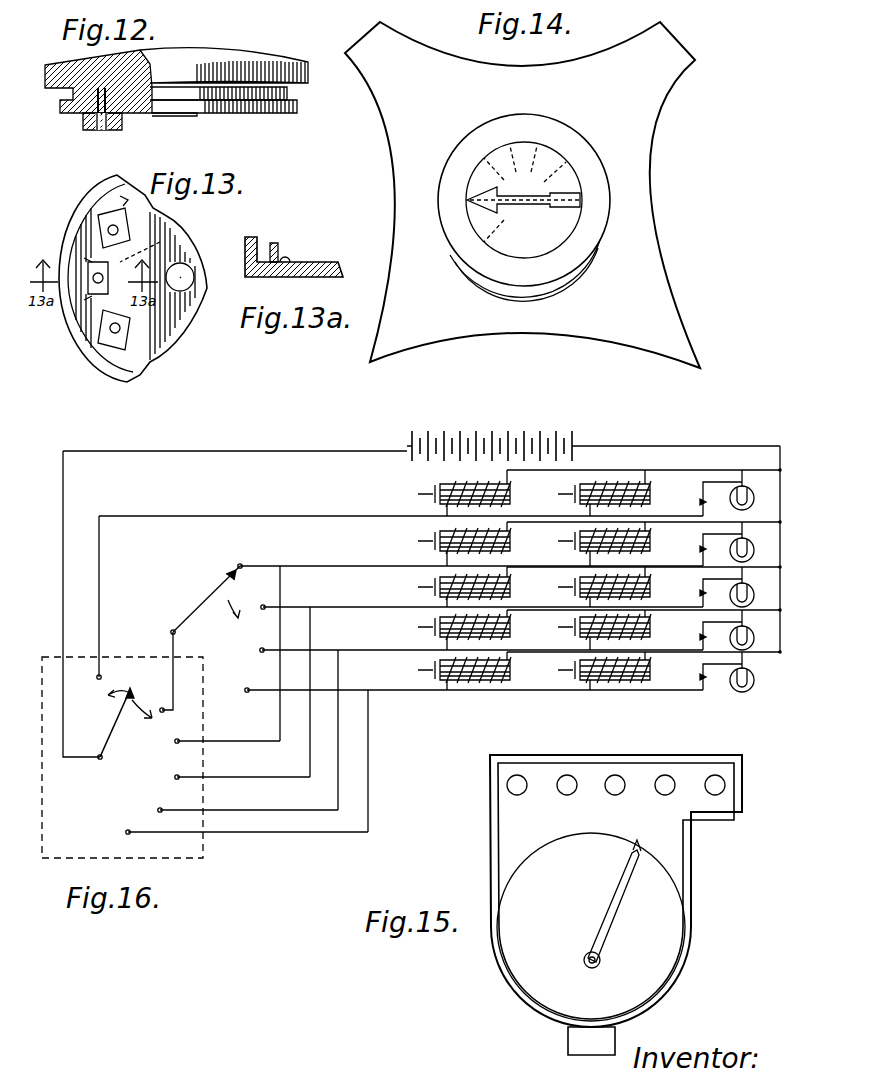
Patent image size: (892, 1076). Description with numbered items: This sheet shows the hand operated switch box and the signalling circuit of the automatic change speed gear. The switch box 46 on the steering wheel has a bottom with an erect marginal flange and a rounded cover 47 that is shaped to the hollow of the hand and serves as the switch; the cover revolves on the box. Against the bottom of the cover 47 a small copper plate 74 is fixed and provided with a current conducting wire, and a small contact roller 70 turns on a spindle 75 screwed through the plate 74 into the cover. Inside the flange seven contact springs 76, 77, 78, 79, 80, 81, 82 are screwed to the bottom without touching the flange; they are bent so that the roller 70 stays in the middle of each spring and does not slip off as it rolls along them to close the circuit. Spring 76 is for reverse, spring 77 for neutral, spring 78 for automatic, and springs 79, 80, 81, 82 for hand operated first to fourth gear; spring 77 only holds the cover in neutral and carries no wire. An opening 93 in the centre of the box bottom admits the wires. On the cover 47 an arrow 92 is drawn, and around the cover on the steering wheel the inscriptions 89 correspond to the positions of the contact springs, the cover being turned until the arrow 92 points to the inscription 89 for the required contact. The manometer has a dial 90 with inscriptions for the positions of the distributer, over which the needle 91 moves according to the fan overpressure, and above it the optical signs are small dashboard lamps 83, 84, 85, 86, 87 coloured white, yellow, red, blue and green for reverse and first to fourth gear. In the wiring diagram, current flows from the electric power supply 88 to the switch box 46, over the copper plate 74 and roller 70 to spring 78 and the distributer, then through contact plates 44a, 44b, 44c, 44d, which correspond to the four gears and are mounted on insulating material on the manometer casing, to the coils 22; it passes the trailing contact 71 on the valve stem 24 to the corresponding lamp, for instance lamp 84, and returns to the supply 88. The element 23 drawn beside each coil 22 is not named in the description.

In FIG. 16, the coils 22 is at (640, 690).
In FIG. 16, the relay core contact 23 is at (568, 688).
In FIG. 16, the valve stem 24 is at (706, 680).
In FIG. 16, the contact plate 44a is at (280, 566).
In FIG. 16, the contact plate 44b is at (283, 605).
In FIG. 16, the contact plate 44c is at (262, 650).
In FIG. 16, the contact plate 44d is at (247, 690).
In FIG. 13A, the switch box 46 is at (250, 238).
In FIG. 16, the switch box 46 is at (48, 657).
In FIG. 12, the cover 47 is at (246, 72).
In FIG. 14, the cover 47 is at (610, 220).
In FIG. 12, the contact roller 70 is at (85, 117).
In FIG. 13, the contact roller 70 is at (160, 242).
In FIG. 16, the contact roller 70 is at (116, 720).
In FIG. 12, the trailing contact 71 is at (193, 116).
In FIG. 16, the trailing contact 71 is at (703, 664).
In FIG. 16, the copper plate 74 is at (63, 745).
In FIG. 12, the spindle 75 is at (102, 130).
In FIG. 13, the contact spring 76 is at (120, 345).
In FIG. 16, the contact spring 76 is at (102, 675).
In FIG. 13, the contact spring 77 is at (92, 297).
In FIG. 13A, the contact spring 77 is at (286, 258).
In FIG. 16, the contact spring 77 is at (132, 690).
In FIG. 13, the contact spring 78 is at (90, 240).
In FIG. 16, the contact spring 78 is at (166, 712).
In FIG. 13, the contact spring 79 is at (123, 197).
In FIG. 16, the contact spring 79 is at (176, 742).
In FIG. 16, the contact spring 80 is at (176, 778).
In FIG. 16, the contact spring 81 is at (162, 809).
In FIG. 16, the contact spring 82 is at (140, 834).
In FIG. 16, the lamp 83 is at (754, 494).
In FIG. 15, the lamp 83 is at (724, 790).
In FIG. 16, the lamp 84 is at (754, 545).
In FIG. 15, the lamp 84 is at (665, 775).
In FIG. 16, the lamp 85 is at (754, 590).
In FIG. 15, the lamp 85 is at (615, 775).
In FIG. 16, the lamp 86 is at (754, 634).
In FIG. 15, the lamp 86 is at (567, 775).
In FIG. 16, the lamp 87 is at (752, 690).
In FIG. 15, the lamp 87 is at (517, 775).
In FIG. 16, the electric power supply 88 is at (520, 432).
In FIG. 14, the figures 89 is at (592, 150).
In FIG. 15, the dial 90 is at (672, 957).
In FIG. 15, the needle 91 is at (607, 913).
In FIG. 14, the arrow 92 is at (540, 205).
In FIG. 13, the opening 93 is at (177, 332).